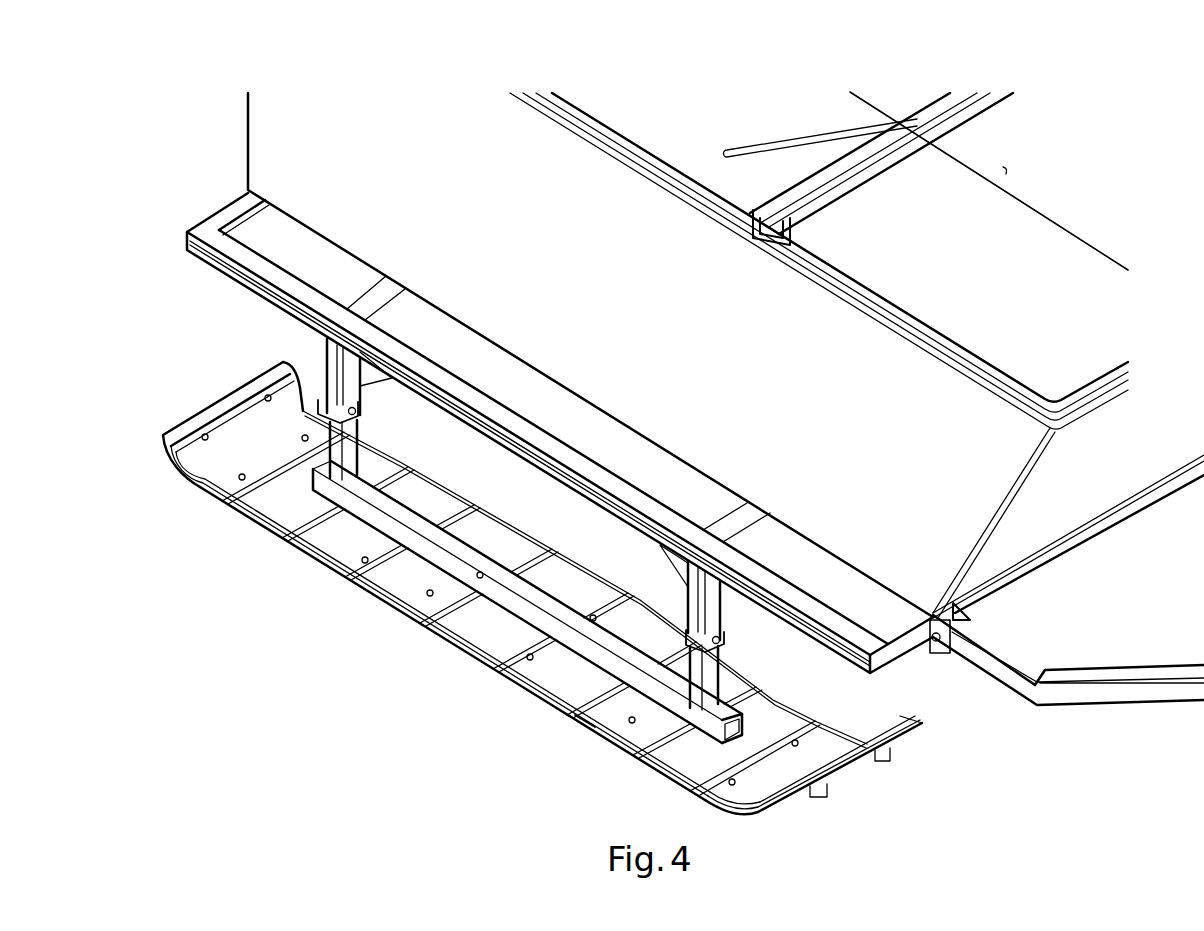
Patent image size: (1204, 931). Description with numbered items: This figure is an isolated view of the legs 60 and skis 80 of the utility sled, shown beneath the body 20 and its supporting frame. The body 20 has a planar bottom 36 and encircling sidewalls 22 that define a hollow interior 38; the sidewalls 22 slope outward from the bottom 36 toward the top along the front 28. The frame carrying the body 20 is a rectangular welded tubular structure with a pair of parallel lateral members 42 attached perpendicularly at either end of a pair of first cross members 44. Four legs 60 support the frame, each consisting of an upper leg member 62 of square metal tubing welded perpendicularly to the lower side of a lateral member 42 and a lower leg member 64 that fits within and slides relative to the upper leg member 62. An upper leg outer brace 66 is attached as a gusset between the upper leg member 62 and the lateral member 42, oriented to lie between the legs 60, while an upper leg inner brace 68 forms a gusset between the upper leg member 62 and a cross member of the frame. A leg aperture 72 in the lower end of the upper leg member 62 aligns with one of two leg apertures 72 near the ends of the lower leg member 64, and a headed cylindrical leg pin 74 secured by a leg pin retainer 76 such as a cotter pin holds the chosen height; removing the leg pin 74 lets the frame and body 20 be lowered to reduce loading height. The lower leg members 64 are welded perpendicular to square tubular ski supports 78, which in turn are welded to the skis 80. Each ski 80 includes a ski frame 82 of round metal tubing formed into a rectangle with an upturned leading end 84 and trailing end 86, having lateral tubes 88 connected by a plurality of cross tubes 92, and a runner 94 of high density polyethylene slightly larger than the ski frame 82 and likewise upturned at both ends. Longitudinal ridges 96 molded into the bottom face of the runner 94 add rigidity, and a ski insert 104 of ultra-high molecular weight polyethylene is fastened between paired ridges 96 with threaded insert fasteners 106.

The body 20 is at (1104, 468).
The sidewalls 22 is at (245, 135).
The front 28 is at (1058, 525).
The bottom 36 is at (1075, 270).
The hollow interior 38 is at (1010, 170).
The lateral members 42 is at (245, 272).
The first cross members 44 is at (210, 226).
The legs 60 is at (484, 522).
The upper leg member 62 is at (333, 372).
The lower leg member 64 is at (350, 448).
The upper leg outer brace 66 is at (524, 469).
The upper leg inner brace 68 is at (722, 598).
The leg aperture 72 is at (343, 488).
The leg pin 74 is at (357, 413).
The leg pin retainer 76 is at (632, 722).
The ski support 78 is at (376, 590).
The skis 80 is at (572, 607).
The ski frame 82 is at (283, 530).
The leading end 84 is at (862, 740).
The trailing end 86 is at (203, 420).
The lateral tubes 88 is at (595, 730).
The cross tubes 92 is at (433, 611).
The runner 94 is at (736, 812).
The longitudinal ridges 96 is at (905, 735).
The ski insert 104 is at (815, 796).
The insert fasteners 106 is at (240, 478).